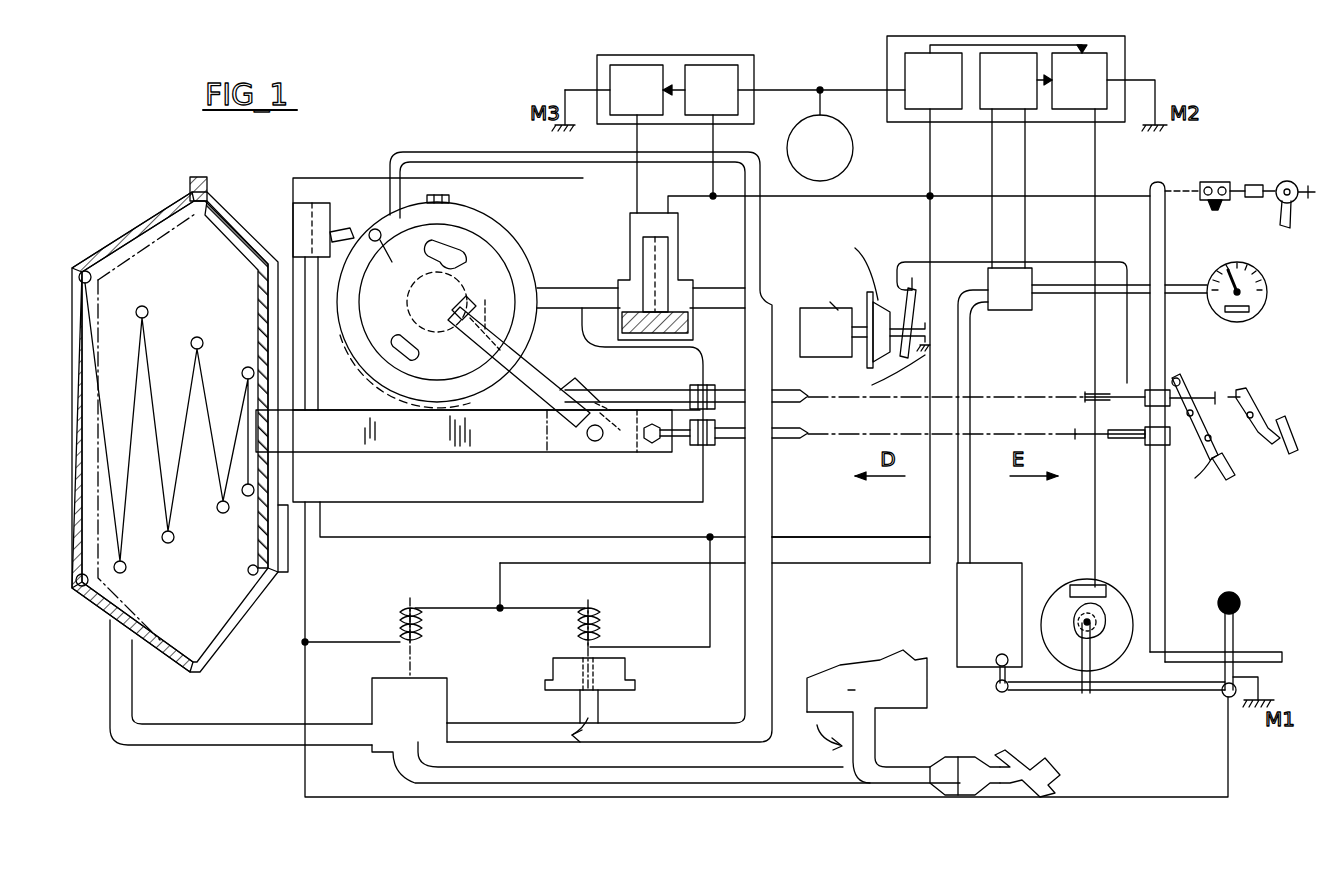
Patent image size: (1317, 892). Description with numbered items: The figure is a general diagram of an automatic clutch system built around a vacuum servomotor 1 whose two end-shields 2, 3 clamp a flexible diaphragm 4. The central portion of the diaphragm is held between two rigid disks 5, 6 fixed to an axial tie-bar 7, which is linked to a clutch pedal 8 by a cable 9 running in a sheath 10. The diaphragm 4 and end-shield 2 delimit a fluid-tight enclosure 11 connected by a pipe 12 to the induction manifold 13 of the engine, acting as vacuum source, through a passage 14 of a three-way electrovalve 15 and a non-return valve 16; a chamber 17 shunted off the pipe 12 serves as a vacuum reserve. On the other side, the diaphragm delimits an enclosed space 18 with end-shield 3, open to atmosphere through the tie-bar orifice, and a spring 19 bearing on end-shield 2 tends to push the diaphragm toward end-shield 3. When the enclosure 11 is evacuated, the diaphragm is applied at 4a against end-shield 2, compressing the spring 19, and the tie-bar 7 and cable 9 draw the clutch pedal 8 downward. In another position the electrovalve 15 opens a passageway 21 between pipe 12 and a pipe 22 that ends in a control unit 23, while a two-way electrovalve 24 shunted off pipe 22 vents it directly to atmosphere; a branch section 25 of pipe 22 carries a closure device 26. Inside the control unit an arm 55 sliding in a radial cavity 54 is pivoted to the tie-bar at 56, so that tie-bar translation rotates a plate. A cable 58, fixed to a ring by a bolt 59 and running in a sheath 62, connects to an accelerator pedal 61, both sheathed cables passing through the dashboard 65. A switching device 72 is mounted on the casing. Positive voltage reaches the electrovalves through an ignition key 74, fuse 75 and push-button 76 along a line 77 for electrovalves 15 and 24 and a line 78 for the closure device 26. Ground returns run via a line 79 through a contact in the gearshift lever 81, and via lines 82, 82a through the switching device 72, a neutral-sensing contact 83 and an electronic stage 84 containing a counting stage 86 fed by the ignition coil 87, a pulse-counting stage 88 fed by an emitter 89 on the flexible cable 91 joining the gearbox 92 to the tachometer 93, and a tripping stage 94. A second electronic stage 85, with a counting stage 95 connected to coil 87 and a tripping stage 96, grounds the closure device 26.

The servomotor 1 is at (143, 190).
The end-shield 2 is at (122, 240).
The end-shield 3 is at (230, 222).
The flexible diaphragm 4 is at (248, 250).
The diaphragm contact location 4a is at (144, 240).
The rigid disk 5 is at (256, 540).
The rigid disk 6 is at (292, 477).
The axial tie-bar 7 is at (442, 438).
The clutch pedal 8 is at (1222, 476).
The cable 9 is at (820, 432).
The sheath 10 is at (785, 440).
The fluid-tight enclosure 11 is at (118, 595).
The pipe 12 is at (240, 745).
The induction manifold 13 is at (1040, 770).
The passage 14 is at (406, 748).
The three-way electrovalve 15 is at (454, 690).
The non-return valve 16 is at (962, 770).
The chamber 17 is at (868, 716).
The enclosed space 18 is at (284, 595).
The spring 19 is at (148, 314).
The passageway 21 is at (425, 739).
The pipe 22 is at (495, 151).
The control unit 23 is at (338, 176).
The two-way electrovalve 24 is at (637, 676).
The branch section 25 is at (598, 280).
The closure device 26 is at (690, 262).
The radial cavity 54 is at (519, 349).
The arm 55 is at (540, 380).
The pivotal attachment 56 is at (605, 444).
The cable 58 is at (622, 391).
The bolt 59 is at (380, 245).
The accelerator pedal 61 is at (1296, 444).
The sheath 62 is at (790, 400).
The dashboard 65 is at (1167, 555).
The switching device 72 is at (293, 213).
The ignition key 74 is at (1283, 180).
The fuse 75 is at (1253, 183).
The push-button 76 is at (1210, 180).
The line 77 is at (930, 478).
The line 78 is at (825, 197).
The line 79 is at (384, 796).
The gearshift lever 81 is at (1234, 632).
The line 82 is at (312, 588).
The line 82a is at (1097, 260).
The contact 83 is at (1095, 585).
The electronic stage 84 is at (912, 125).
The electronic stage 85 is at (757, 80).
The counting stage 86 is at (996, 304).
The ignition coil 87 is at (820, 134).
The pulse-counting stage 88 is at (1016, 160).
The emitter 89 is at (1097, 289).
The flexible cable 91 is at (972, 354).
The gearbox 92 is at (989, 615).
The tachometer 93 is at (1265, 297).
The tripping stage 94 is at (1109, 320).
The counting stage 95 is at (784, 132).
The tripping stage 96 is at (607, 139).